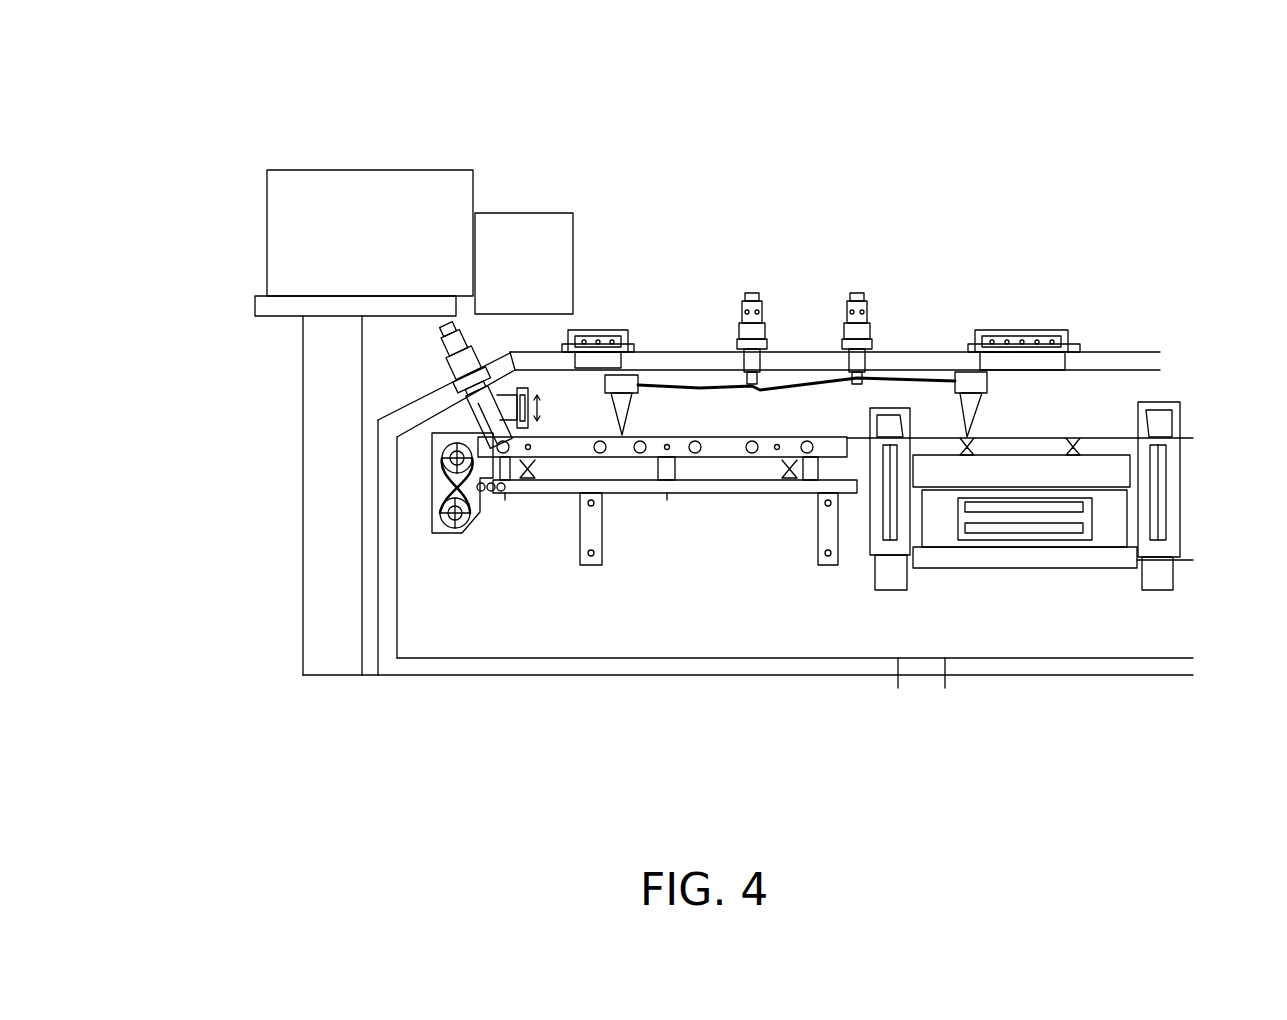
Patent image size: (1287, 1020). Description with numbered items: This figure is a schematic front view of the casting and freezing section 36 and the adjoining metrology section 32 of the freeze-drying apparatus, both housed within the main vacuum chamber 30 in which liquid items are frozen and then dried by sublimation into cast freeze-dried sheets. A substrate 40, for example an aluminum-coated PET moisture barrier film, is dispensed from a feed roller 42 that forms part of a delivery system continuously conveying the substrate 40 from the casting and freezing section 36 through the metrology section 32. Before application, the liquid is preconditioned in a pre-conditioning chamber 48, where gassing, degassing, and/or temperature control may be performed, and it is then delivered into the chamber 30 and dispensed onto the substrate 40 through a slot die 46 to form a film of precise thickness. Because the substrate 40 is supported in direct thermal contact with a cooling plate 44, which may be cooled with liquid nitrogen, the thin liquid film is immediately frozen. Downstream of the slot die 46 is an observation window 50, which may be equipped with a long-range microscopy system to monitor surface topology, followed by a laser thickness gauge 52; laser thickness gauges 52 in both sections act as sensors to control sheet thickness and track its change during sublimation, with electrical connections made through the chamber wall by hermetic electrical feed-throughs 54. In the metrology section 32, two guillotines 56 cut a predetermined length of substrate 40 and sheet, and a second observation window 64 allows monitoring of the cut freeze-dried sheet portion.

The main vacuum chamber 30 is at (741, 599).
The metrology section 32 is at (1070, 400).
The casting and freezing section 36 is at (628, 540).
The substrate 40 is at (358, 499).
The feed roller 42 is at (327, 544).
The cooling plate 44 is at (575, 448).
The slot die 46 is at (351, 384).
The pre-conditioning chamber 48 is at (335, 236).
The observation window 50 is at (598, 306).
The laser thickness gauge 52 is at (789, 288).
The hermetic electrical feed-throughs 54 is at (847, 278).
The guillotines 56 is at (885, 408).
The second observation window 64 is at (1047, 322).